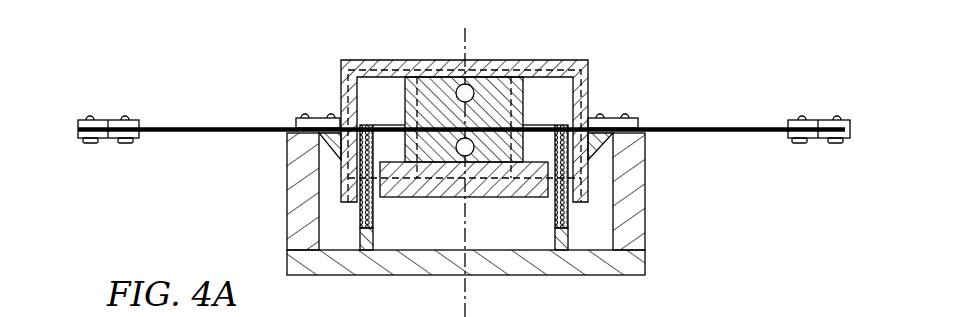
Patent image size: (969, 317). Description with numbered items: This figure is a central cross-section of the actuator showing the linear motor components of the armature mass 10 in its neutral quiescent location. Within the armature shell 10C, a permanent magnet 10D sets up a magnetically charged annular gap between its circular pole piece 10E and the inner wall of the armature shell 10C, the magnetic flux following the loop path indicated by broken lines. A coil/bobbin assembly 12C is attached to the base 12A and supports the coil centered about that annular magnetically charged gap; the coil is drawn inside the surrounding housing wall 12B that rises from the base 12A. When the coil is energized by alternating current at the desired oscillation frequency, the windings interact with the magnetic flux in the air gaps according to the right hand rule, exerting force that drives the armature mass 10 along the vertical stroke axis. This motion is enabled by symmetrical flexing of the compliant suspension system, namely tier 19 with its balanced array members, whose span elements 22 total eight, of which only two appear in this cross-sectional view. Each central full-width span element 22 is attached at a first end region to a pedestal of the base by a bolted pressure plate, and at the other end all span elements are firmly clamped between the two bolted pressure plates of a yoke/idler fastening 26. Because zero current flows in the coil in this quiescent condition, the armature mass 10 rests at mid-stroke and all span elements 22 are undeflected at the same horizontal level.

The armature mass 10 is at (346, 43).
The armature shell 10C is at (342, 64).
The permanent magnet 10D is at (497, 100).
The circular pole piece 10E is at (532, 195).
The base 12A is at (308, 265).
The housing side wall 12B is at (305, 203).
The coil/bobbin assembly 12C is at (453, 232).
The tier 19 is at (63, 113).
The central flat spring span element 22 is at (172, 128).
The yoke/idler fastening 26 is at (108, 120).